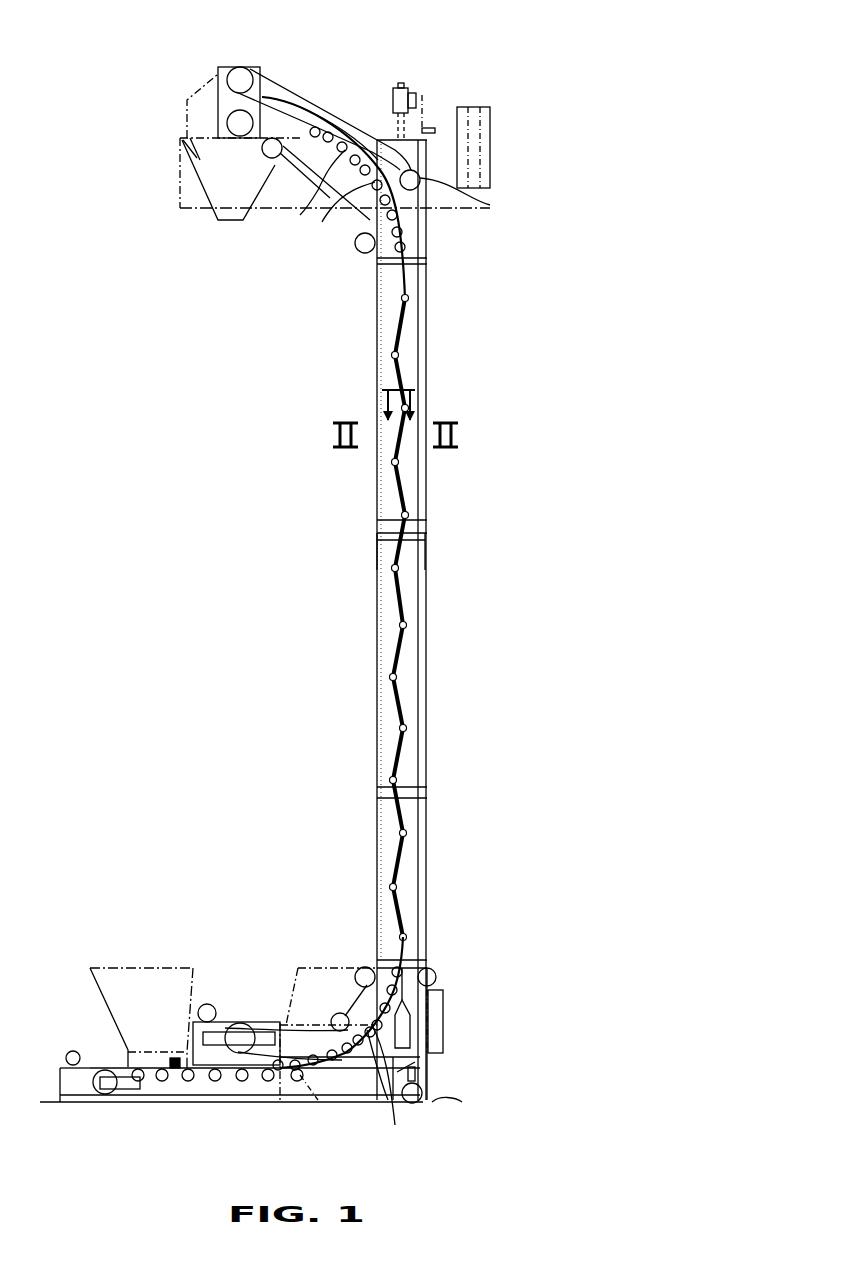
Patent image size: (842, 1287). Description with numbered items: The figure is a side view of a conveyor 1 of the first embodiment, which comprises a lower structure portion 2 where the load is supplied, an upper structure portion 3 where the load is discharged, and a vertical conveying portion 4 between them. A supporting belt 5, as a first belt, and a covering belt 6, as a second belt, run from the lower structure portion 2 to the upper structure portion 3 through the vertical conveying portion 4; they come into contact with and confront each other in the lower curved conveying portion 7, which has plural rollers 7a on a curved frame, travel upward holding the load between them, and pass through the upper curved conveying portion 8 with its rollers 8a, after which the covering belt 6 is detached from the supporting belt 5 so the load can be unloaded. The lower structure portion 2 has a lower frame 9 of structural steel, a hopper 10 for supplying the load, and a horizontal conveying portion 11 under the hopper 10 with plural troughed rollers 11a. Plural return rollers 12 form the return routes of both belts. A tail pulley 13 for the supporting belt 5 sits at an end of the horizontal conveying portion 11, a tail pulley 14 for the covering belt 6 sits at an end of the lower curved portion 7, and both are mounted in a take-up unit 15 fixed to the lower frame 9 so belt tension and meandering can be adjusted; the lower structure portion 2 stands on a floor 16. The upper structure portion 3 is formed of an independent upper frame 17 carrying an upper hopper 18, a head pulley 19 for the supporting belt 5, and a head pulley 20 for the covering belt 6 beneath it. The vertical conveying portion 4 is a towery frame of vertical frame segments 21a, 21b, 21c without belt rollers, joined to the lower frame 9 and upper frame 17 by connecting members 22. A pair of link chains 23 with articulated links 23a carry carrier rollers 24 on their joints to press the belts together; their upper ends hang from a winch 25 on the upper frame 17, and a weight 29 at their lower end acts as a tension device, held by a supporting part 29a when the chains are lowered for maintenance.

The conveyor 1 is at (356, 485).
The lower structure portion 2 is at (256, 1000).
The upper structure portion 3 is at (316, 100).
The vertical conveying portion 4 is at (356, 372).
The supporting belt 5 is at (400, 687).
The covering belt 6 is at (377, 712).
The lower curved conveying portion 7 is at (352, 1065).
The rollers 7a is at (395, 1125).
The upper curved conveying portion 8 is at (352, 117).
The rollers 8a is at (322, 222).
The lower frame 9 is at (303, 1085).
The hopper 10 is at (153, 965).
The horizontal conveying portion 11 is at (176, 1060).
The rollers 11a is at (242, 1080).
The return rollers 12 is at (273, 158).
The tail pulley 13 is at (95, 1092).
The tail pulley 14 is at (240, 1022).
The take-up unit 15 is at (143, 1092).
The floor 16 is at (462, 1102).
The upper frame 17 is at (180, 196).
The upper hopper 18 is at (200, 158).
The head pulley 19 is at (237, 82).
The head pulley 20 is at (235, 130).
The vertical frame segment 21a is at (427, 452).
The vertical frame segment 21b is at (427, 626).
The vertical frame segment 21c is at (427, 845).
The connecting members 22 is at (420, 262).
The link chains 23 is at (392, 594).
The links 23a is at (402, 552).
The carrier rollers 24 is at (407, 517).
The winch 25 is at (432, 93).
The weight 29 is at (412, 1033).
The supporting part 29a is at (420, 1072).